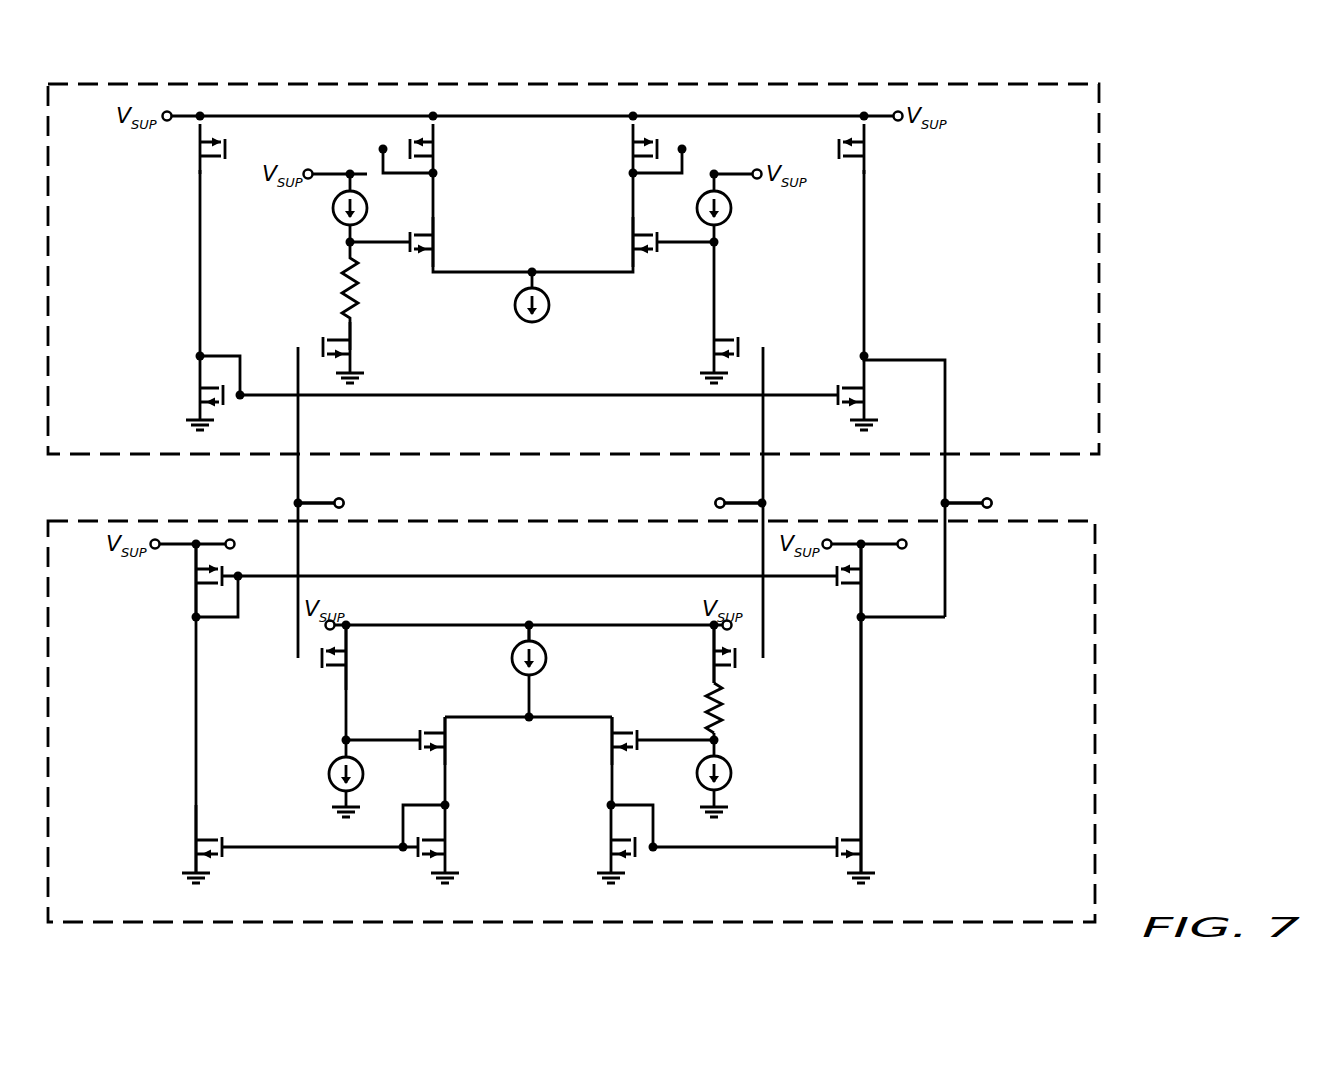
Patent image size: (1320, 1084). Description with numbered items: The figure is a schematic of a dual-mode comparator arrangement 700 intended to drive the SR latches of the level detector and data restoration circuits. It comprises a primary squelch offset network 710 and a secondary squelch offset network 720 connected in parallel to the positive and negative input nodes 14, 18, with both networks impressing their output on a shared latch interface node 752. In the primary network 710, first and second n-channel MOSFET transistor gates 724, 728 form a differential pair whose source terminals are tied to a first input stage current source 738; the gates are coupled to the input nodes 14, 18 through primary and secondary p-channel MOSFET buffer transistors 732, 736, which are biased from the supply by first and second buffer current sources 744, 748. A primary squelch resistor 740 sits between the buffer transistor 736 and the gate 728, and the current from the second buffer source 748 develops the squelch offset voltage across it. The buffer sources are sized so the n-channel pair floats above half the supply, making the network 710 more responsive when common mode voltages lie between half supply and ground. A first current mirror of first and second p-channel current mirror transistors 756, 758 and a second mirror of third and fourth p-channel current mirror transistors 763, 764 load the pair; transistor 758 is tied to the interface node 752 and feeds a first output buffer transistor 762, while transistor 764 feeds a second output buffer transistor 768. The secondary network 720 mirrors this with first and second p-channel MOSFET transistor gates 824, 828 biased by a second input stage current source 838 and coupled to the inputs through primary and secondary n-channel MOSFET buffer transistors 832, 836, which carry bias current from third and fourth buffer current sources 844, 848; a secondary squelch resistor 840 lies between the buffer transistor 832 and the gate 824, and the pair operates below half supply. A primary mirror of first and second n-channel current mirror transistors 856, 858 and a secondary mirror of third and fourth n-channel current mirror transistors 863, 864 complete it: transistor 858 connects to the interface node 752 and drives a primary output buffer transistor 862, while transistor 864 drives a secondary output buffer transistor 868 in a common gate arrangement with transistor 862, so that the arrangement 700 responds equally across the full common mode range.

The dual-mode comparator arrangement 700 is at (1148, 203).
The primary squelch offset network 710 is at (1099, 380).
The secondary squelch offset network 720 is at (1095, 610).
The negative input node 18 is at (344, 498).
The positive input node 14 is at (715, 498).
The latch interface node 752 is at (992, 498).
The fourth p-channel current mirror transistor 764 is at (198, 148).
The third p-channel current mirror transistor 763 is at (436, 151).
The first p-channel current mirror transistor 756 is at (633, 149).
The second p-channel current mirror transistor 758 is at (866, 150).
The second n-channel MOSFET transistor gate 728 is at (436, 241).
The first n-channel MOSFET transistor gate 724 is at (631, 243).
The secondary p-channel MOSFET buffer transistor 736 is at (352, 350).
The primary p-channel MOSFET buffer transistor 732 is at (716, 348).
The second output buffer transistor 768 is at (198, 396).
The first output buffer transistor 762 is at (866, 396).
The second buffer current source 748 is at (334, 210).
The first buffer current source 744 is at (730, 206).
The first input stage current source 738 is at (516, 313).
The primary squelch resistor 740 is at (358, 287).
The secondary output buffer transistor 868 is at (196, 576).
The primary output buffer transistor 862 is at (861, 576).
The secondary n-channel MOSFET buffer transistor 836 is at (348, 657).
The primary n-channel MOSFET buffer transistor 832 is at (718, 660).
The second p-channel MOSFET transistor gate 828 is at (447, 741).
The first p-channel MOSFET transistor gate 824 is at (612, 740).
The third n-channel current mirror transistor 863 is at (447, 852).
The first n-channel current mirror transistor 856 is at (609, 847).
The fourth n-channel current mirror transistor 864 is at (196, 847).
The second n-channel current mirror transistor 858 is at (863, 847).
The second input stage current source 838 is at (514, 660).
The fourth buffer current source 848 is at (331, 771).
The third buffer current source 844 is at (728, 778).
The secondary squelch resistor 840 is at (706, 702).